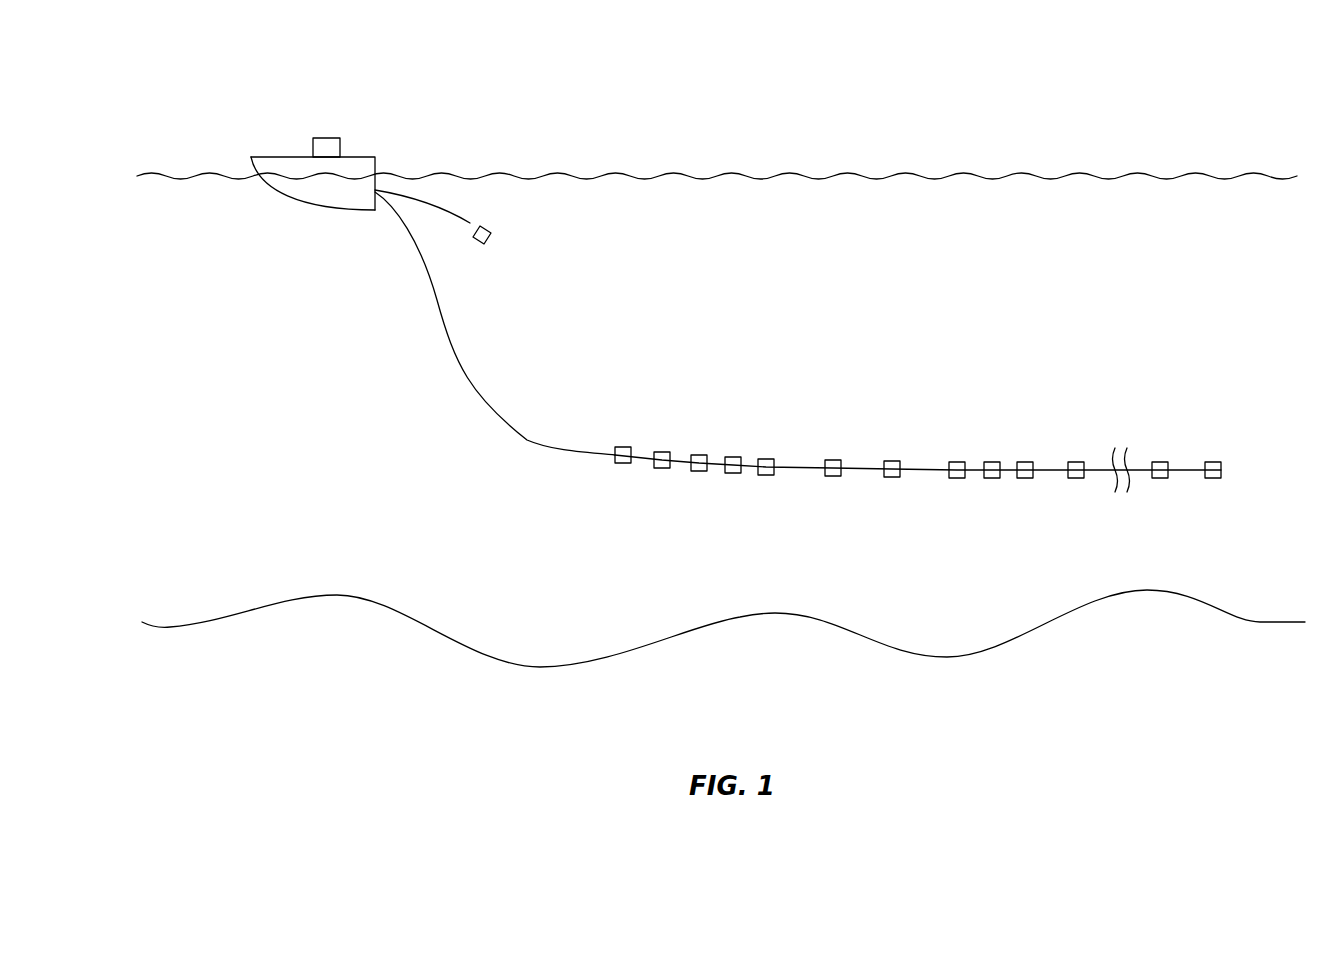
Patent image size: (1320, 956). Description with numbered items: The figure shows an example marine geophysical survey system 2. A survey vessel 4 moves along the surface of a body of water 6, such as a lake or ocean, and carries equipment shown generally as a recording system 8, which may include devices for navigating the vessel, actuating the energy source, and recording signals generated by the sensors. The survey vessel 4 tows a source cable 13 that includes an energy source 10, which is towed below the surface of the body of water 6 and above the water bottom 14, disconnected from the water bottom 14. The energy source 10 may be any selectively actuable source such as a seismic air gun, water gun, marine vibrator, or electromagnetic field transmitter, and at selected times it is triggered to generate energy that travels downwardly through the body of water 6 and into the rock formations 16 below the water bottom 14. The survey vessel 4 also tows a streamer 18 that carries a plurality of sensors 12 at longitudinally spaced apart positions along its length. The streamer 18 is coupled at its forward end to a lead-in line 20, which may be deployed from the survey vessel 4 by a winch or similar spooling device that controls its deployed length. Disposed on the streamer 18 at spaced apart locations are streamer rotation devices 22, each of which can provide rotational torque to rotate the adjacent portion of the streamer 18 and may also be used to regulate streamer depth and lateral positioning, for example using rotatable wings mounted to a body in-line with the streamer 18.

The marine geophysical survey system 2 is at (368, 330).
The survey vessel 4 is at (363, 163).
The body of water 6 is at (835, 260).
The recording system 8 is at (310, 148).
The energy source 10 is at (478, 247).
The sensors 12 is at (660, 470).
The source cable 13 is at (460, 220).
The water bottom 14 is at (893, 643).
The rock formations 16 is at (770, 686).
The streamer 18 is at (802, 467).
The lead-in line 20 is at (480, 397).
The streamer rotation devices 22 is at (733, 457).